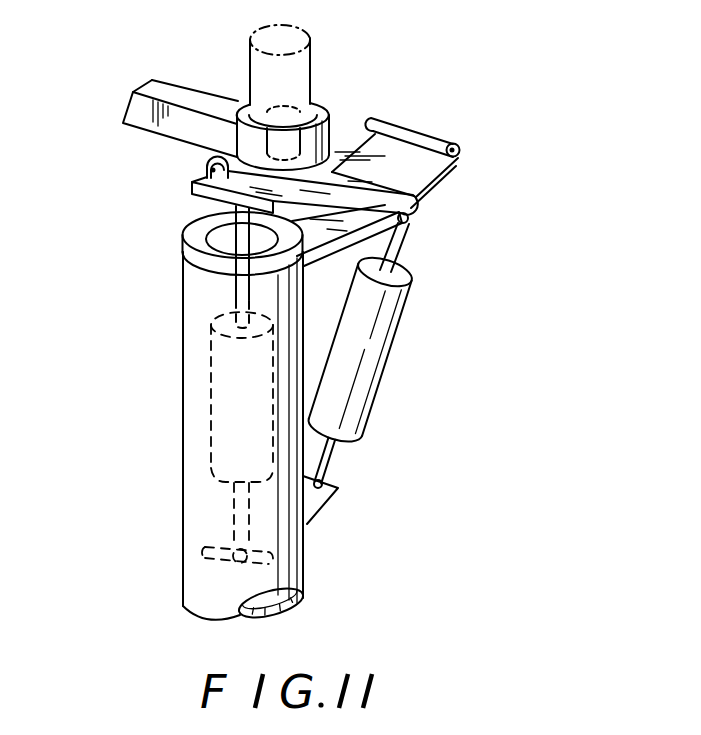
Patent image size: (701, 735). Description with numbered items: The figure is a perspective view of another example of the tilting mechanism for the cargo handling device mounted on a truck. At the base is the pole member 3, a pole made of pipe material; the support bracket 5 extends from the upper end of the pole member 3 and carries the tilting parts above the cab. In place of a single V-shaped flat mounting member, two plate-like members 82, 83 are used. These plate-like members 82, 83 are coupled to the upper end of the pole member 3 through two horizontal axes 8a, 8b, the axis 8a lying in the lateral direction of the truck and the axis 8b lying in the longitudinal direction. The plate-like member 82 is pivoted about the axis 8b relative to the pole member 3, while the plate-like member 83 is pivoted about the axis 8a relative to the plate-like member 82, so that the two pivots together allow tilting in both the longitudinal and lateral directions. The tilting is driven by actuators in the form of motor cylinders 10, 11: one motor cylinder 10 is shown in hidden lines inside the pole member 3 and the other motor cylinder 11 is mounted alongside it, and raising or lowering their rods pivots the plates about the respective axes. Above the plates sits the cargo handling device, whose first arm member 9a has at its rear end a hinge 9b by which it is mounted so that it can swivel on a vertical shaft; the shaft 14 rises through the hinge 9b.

The pole member 3 is at (285, 571).
The support bracket 5 is at (438, 170).
The horizontal axis 8a is at (207, 166).
The horizontal axis 8b is at (459, 148).
The first arm member 9a is at (181, 87).
The hinge 9b is at (333, 105).
The motor cylinder 10 is at (215, 386).
The motor cylinder 11 is at (365, 366).
The shaft 14 is at (311, 53).
The plate-like member 82 is at (398, 145).
The plate-like member 83 is at (412, 210).